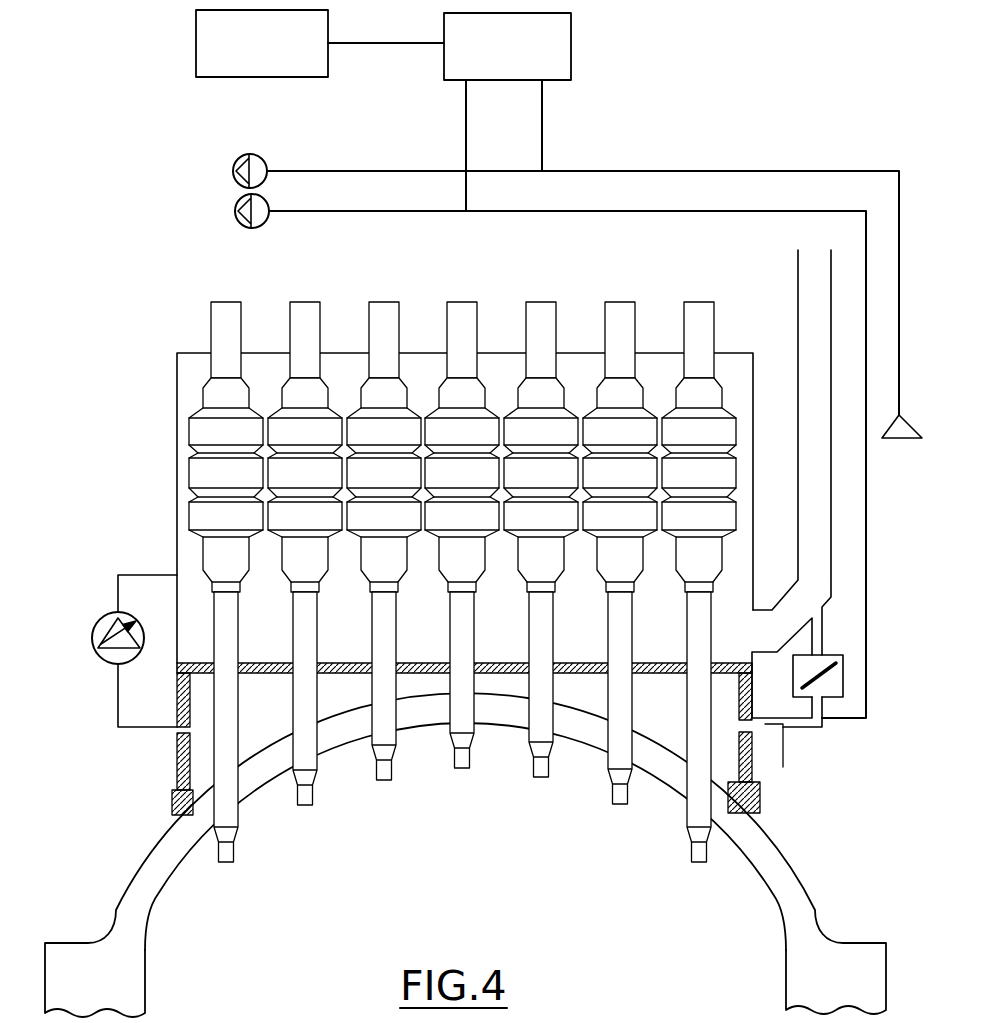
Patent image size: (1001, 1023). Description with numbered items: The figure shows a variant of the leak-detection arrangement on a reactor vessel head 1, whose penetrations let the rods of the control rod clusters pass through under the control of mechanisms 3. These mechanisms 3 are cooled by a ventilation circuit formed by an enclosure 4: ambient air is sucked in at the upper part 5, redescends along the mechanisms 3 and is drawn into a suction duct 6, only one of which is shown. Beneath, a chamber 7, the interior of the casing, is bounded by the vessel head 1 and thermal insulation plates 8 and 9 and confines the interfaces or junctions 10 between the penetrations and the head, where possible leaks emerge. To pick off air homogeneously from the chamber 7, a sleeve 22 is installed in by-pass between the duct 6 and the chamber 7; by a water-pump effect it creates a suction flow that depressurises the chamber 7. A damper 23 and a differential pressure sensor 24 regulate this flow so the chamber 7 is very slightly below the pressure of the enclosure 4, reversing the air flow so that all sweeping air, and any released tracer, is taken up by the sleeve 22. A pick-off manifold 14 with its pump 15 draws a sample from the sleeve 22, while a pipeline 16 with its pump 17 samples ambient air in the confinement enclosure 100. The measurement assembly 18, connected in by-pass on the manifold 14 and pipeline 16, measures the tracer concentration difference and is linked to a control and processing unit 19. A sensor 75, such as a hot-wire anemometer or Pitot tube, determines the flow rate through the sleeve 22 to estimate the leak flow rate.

The vessel head 1 is at (803, 867).
The mechanisms 3 is at (180, 428).
The enclosure 4 is at (172, 518).
The upper part 5 is at (577, 378).
The ducts 6 is at (806, 461).
The chamber 7 is at (665, 707).
The thermal insulation plate 8 is at (170, 767).
The thermal insulation plate 9 is at (345, 661).
The interfaces or junctions 10 is at (245, 743).
The pick-off manifold 14 is at (872, 515).
The pump 15 is at (226, 209).
The pipeline 16 is at (878, 166).
The pump 17 is at (226, 168).
The measurement assembly 18 is at (572, 43).
The control and processing unit 19 is at (195, 41).
The sleeve 22 is at (818, 733).
The damper 23 is at (850, 667).
The differential pressure sensor 24 is at (90, 620).
The sensor 75 is at (788, 762).
The confinement enclosure 100 is at (897, 433).